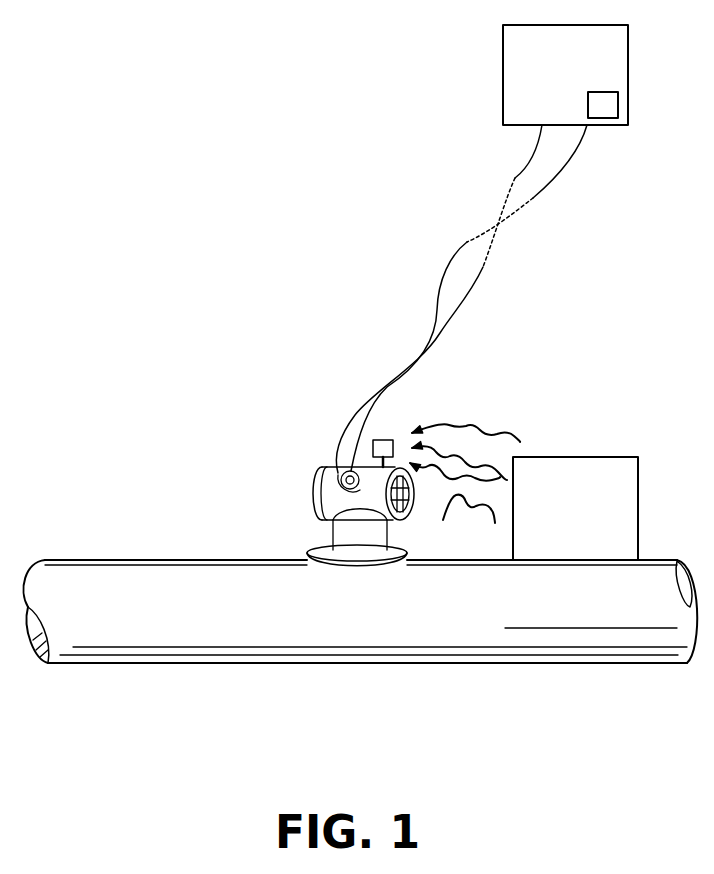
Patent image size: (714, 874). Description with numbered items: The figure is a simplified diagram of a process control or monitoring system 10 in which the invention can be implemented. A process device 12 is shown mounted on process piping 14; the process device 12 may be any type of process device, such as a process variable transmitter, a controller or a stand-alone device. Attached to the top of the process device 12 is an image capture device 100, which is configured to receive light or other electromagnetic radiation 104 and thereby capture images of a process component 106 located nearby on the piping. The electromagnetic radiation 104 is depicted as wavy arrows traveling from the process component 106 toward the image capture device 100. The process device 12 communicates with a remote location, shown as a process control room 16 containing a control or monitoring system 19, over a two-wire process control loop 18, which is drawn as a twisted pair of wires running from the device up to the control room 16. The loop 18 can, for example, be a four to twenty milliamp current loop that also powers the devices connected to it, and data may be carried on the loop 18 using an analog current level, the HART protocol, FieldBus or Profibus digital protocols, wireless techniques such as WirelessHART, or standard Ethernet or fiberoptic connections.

The process control or monitoring system 10 is at (204, 146).
The process device 12 is at (323, 483).
The process piping 14 is at (595, 680).
The process control room 16 is at (565, 75).
The two-wire process control loop 18 is at (430, 347).
The control or monitoring system 19 is at (605, 105).
The image capture device 100 is at (396, 430).
The electromagnetic radiation 104 is at (465, 487).
The process component 106 is at (575, 508).